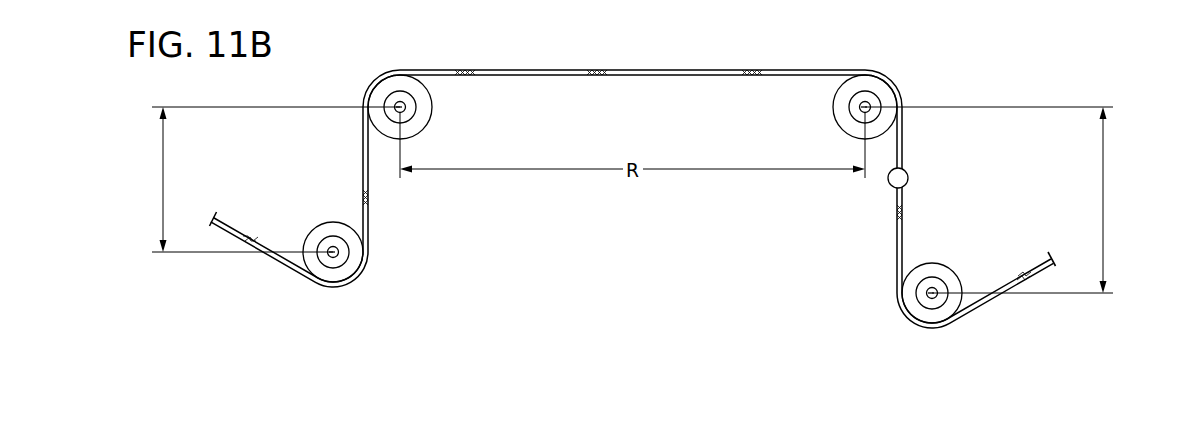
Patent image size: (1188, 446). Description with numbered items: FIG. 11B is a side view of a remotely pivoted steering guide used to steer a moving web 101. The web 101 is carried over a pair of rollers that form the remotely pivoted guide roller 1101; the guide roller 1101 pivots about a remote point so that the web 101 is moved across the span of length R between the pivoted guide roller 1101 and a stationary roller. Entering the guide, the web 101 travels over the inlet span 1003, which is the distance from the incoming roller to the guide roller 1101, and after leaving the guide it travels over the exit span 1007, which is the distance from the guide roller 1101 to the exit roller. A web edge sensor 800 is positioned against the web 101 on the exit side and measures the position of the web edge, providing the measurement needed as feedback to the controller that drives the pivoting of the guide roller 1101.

The web 101 is at (517, 69).
The remotely pivoted guide roller 1101 is at (432, 113).
The web edge sensor 800 is at (909, 180).
The inlet span 1003 is at (163, 178).
The exit span 1007 is at (1105, 200).